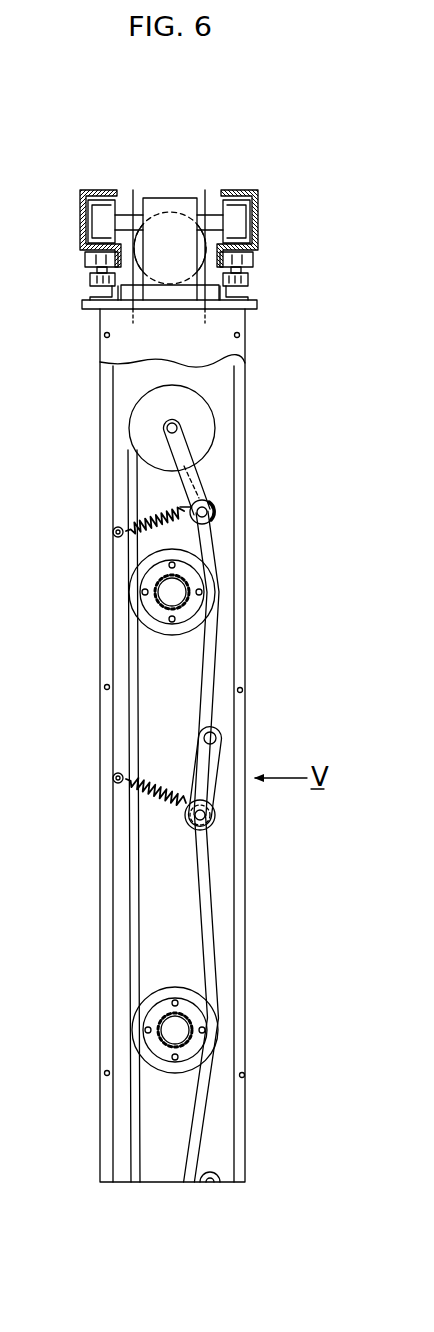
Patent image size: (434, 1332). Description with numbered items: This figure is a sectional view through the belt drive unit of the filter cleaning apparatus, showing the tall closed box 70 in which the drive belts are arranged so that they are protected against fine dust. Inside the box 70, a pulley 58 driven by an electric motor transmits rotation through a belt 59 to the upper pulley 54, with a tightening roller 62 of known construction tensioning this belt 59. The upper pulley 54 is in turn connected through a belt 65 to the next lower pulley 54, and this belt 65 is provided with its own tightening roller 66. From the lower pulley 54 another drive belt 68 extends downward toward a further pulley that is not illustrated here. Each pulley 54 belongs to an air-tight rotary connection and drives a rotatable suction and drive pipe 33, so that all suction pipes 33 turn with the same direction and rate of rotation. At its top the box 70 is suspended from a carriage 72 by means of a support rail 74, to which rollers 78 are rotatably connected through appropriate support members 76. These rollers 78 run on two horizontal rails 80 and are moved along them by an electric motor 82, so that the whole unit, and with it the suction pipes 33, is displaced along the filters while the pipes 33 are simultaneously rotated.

The suction and drive pipe 33 is at (156, 594).
The pulley 54 is at (216, 588).
The pulley 58 is at (200, 415).
The belt 59 is at (203, 463).
The tightening roller 62 is at (228, 510).
The belt 65 is at (203, 710).
The tightening roller 66 is at (217, 818).
The drive belt 68 is at (208, 1112).
The closed box 70 is at (227, 350).
The carriage 72 is at (270, 189).
The support rail 74 is at (253, 302).
The support member 76 is at (173, 210).
The roller 78 is at (100, 218).
The horizontal rail 80 is at (98, 190).
The electric motor 82 is at (133, 190).